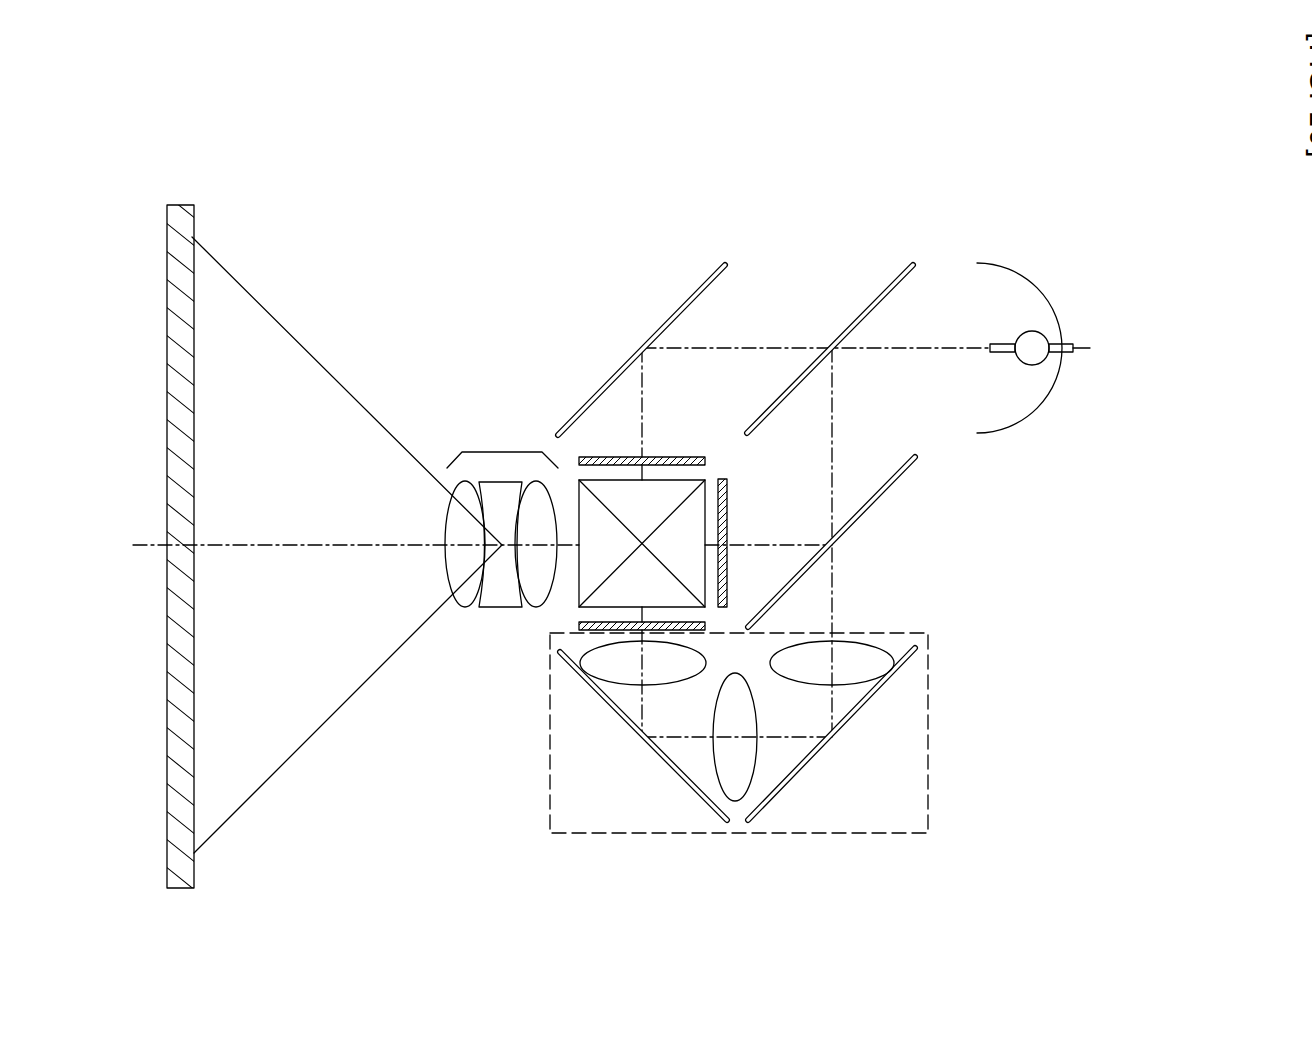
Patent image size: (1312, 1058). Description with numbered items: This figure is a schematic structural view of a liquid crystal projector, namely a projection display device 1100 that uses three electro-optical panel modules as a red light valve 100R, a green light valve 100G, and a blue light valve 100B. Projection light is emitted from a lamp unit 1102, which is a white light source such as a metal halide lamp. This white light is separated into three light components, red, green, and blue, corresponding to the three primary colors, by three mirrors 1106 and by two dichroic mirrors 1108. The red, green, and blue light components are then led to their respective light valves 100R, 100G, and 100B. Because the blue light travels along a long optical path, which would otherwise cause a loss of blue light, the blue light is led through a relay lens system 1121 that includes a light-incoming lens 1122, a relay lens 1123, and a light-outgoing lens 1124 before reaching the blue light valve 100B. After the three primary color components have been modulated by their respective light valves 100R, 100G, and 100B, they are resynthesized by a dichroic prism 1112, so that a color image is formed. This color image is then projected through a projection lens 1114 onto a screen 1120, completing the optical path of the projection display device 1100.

The projection display device 1100 is at (932, 193).
The lamp unit 1102 is at (1033, 373).
The mirrors 1106 is at (645, 330).
The dichroic mirrors 1108 is at (868, 305).
The red light valve 100R is at (623, 457).
The green light valve 100G is at (716, 474).
The blue light valve 100B is at (577, 625).
The dichroic prism 1112 is at (577, 604).
The projection lens 1114 is at (513, 450).
The screen 1120 is at (197, 870).
The relay lens system 1121 is at (930, 742).
The light-incoming lens 1122 is at (867, 655).
The relay lens 1123 is at (750, 753).
The light-outgoing lens 1124 is at (608, 668).